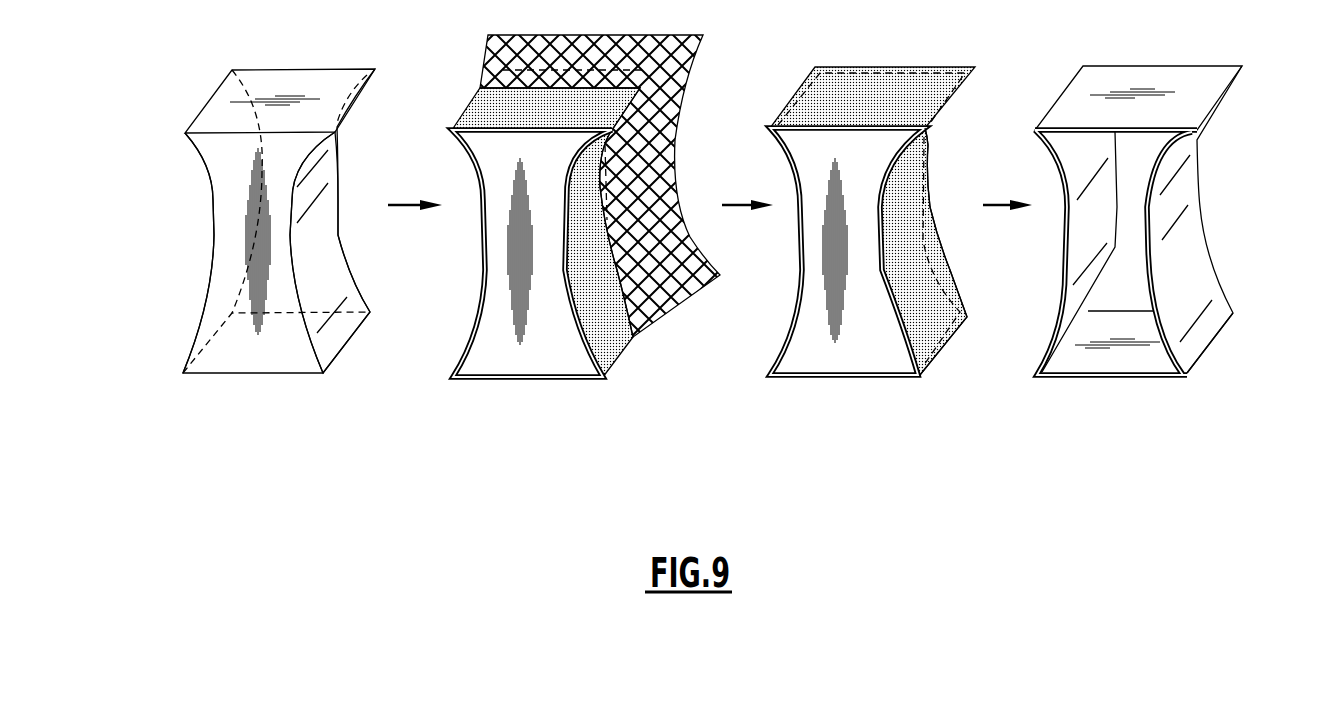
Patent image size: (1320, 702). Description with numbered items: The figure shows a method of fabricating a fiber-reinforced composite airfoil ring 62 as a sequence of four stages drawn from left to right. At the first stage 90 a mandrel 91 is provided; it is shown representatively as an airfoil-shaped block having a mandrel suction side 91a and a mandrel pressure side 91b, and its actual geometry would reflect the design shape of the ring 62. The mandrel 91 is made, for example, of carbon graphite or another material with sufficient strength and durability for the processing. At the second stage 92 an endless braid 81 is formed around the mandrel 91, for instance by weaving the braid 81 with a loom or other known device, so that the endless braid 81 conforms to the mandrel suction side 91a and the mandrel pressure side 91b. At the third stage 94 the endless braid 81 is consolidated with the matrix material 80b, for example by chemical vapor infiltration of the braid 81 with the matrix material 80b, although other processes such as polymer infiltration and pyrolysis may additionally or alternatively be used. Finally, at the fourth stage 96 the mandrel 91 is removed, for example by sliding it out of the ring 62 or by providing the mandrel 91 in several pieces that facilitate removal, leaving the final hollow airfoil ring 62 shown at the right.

The providing step 90 is at (262, 402).
The mandrel 91 is at (338, 64).
The mandrel suction side 91a is at (315, 252).
The mandrel pressure side 91b is at (212, 224).
The endless braid 81 is at (488, 112).
The braid forming step 92 is at (517, 402).
The consolidating step 94 is at (849, 402).
The matrix material 80b is at (907, 258).
The mandrel removal step 96 is at (1117, 402).
The fiber-reinforced airfoil ring 62 is at (1194, 353).